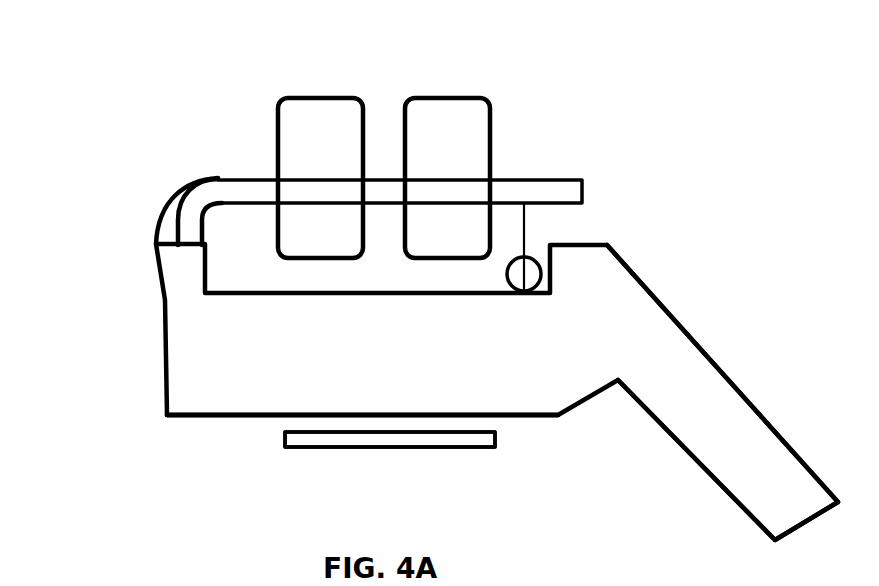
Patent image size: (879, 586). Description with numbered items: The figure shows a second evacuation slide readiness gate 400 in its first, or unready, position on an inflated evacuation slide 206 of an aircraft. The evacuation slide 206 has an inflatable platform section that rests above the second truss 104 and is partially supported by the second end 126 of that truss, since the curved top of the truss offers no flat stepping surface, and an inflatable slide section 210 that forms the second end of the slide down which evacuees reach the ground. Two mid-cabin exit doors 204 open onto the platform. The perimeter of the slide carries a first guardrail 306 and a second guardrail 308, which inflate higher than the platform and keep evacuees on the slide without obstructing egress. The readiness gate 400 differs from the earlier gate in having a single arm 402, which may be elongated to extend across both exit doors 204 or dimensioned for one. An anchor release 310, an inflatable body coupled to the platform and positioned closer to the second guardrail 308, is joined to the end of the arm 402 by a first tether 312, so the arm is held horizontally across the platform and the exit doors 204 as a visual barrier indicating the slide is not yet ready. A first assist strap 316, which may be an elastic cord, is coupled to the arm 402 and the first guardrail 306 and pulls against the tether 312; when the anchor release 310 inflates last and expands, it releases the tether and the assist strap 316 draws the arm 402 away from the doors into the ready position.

The second truss 104 is at (318, 448).
The second end of the second truss 126 is at (390, 439).
The mid-cabin exit doors 204 is at (300, 98).
The evacuation slide 206 is at (202, 410).
The slide section 210 is at (687, 370).
The first guardrail 306 is at (160, 283).
The second guardrail 308 is at (610, 272).
The anchor release 310 is at (508, 275).
The first tether 312 is at (520, 222).
The first assist strap 316 is at (160, 209).
The second evacuation slide readiness gate 400 is at (110, 188).
The single arm 402 is at (525, 180).